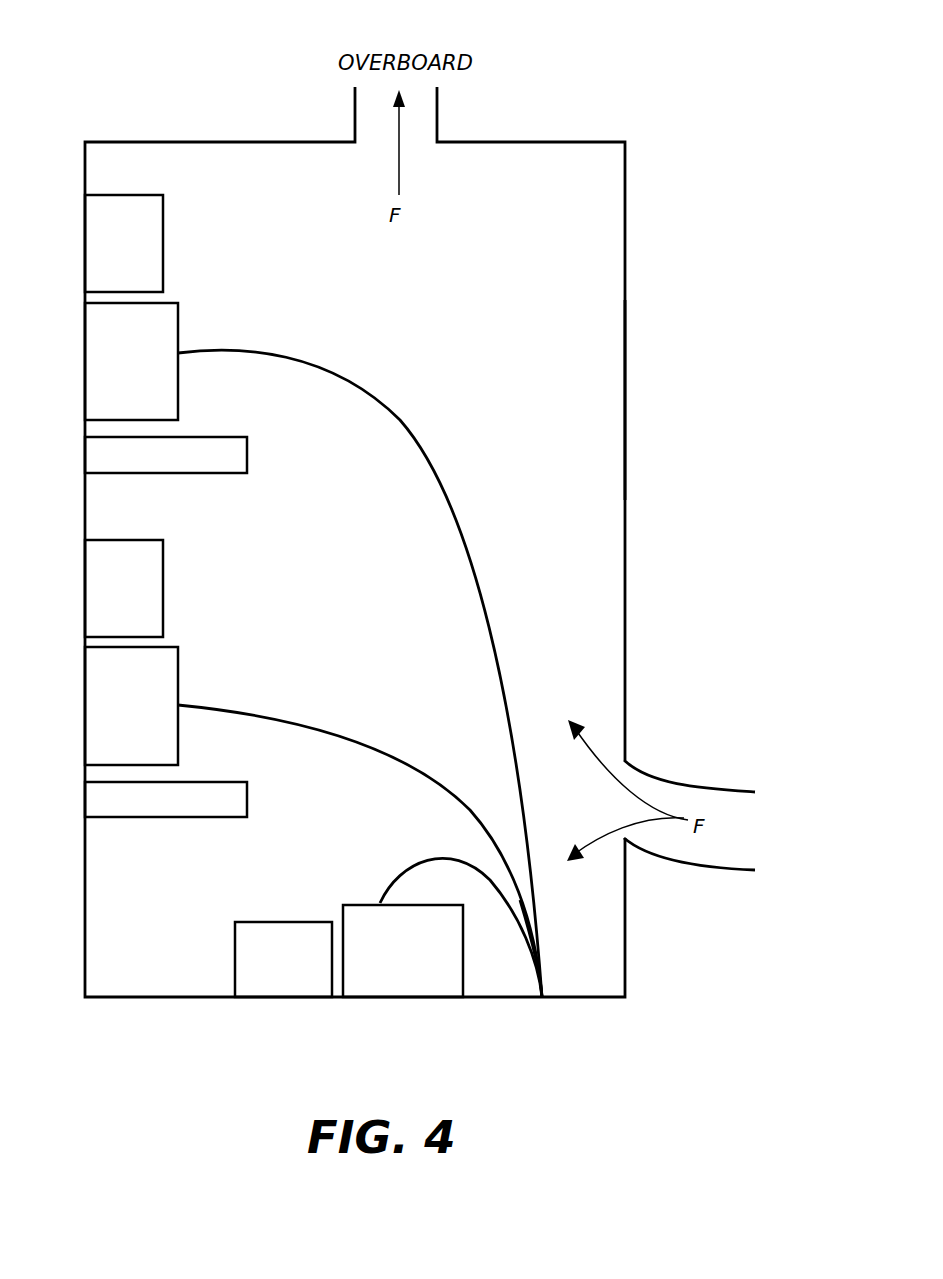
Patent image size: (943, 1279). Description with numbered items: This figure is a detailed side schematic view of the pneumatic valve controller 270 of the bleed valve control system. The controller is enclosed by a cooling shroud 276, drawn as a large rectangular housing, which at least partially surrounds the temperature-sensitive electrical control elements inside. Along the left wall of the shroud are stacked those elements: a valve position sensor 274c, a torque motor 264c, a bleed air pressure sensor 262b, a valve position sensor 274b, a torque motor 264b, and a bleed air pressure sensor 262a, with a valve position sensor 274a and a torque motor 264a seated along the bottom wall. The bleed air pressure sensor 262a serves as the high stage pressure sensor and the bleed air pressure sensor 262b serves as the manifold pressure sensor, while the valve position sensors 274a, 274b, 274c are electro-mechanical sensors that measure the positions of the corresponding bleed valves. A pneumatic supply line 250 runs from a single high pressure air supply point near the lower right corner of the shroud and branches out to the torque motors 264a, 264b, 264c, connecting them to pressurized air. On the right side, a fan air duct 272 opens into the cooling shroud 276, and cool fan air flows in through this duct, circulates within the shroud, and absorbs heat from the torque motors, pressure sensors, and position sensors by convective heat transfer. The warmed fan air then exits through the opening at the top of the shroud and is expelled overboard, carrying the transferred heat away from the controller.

The pneumatic valve controller 270 is at (702, 102).
The cooling shroud 276 is at (625, 385).
The fan air duct 272 is at (662, 772).
The valve position sensor 274c is at (163, 257).
The torque motor 264c is at (178, 333).
The bleed air pressure sensor 262b is at (247, 460).
The valve position sensor 274b is at (163, 597).
The torque motor 264b is at (178, 686).
The bleed air pressure sensor 262a is at (247, 805).
The valve position sensor 274a is at (265, 920).
The torque motor 264a is at (370, 903).
The pneumatic supply line 250 is at (545, 985).